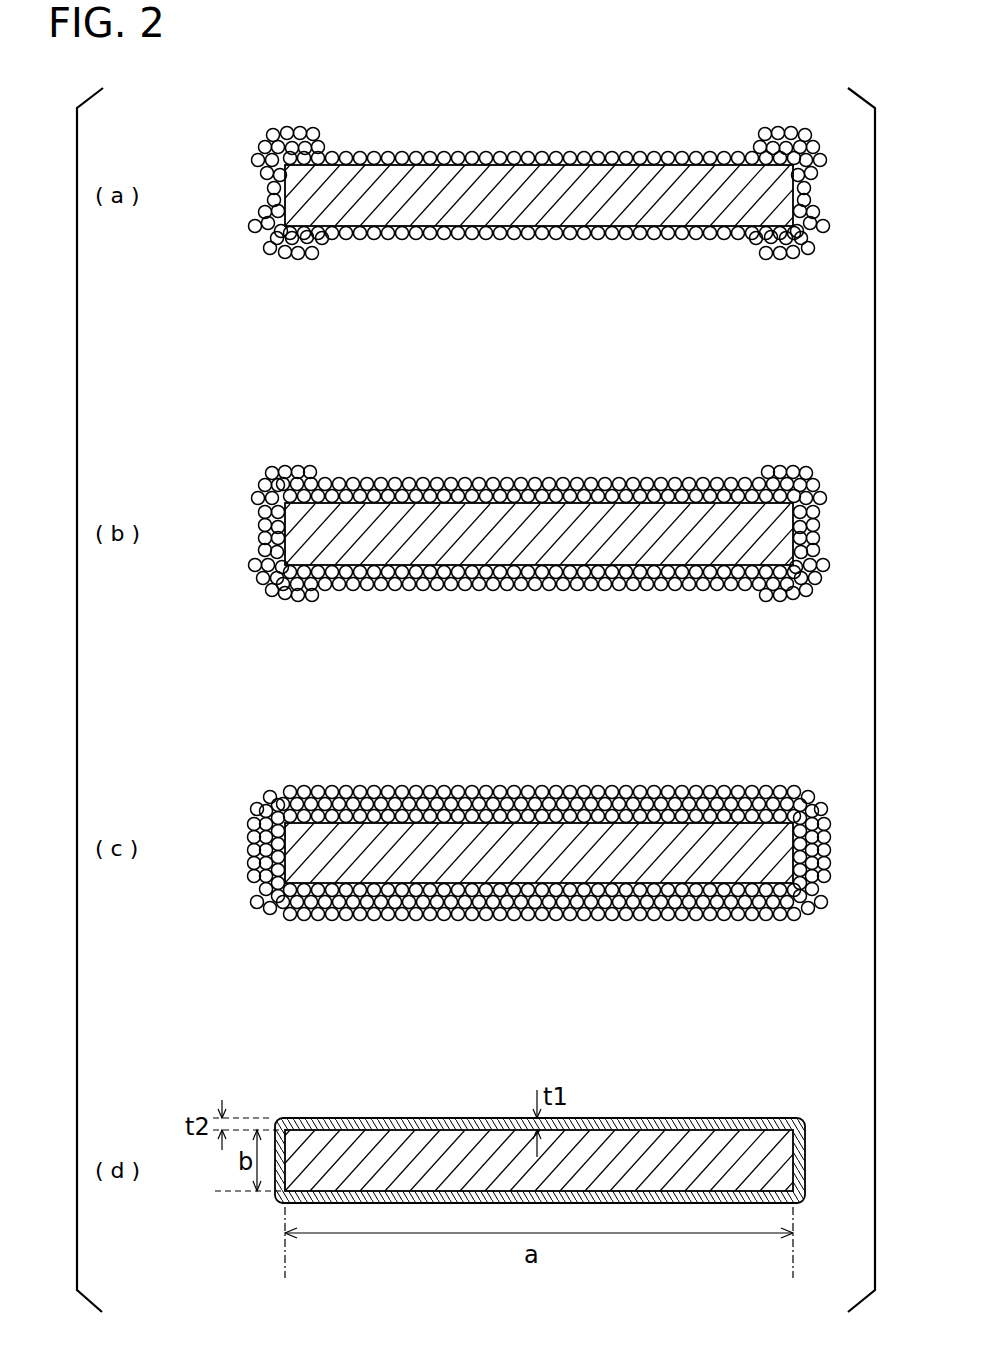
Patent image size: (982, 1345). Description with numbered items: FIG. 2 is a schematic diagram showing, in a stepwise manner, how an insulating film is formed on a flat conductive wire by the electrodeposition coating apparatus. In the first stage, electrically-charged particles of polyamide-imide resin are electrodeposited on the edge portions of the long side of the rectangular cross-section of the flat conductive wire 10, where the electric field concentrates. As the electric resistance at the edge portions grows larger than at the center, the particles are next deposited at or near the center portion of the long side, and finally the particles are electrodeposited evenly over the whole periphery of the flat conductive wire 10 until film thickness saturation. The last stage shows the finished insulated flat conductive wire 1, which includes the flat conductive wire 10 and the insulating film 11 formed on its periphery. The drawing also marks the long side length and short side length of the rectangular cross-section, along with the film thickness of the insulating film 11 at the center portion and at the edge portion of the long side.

The insulated flat conductive wire 1 is at (504, 1121).
The flat conductive wire 10 is at (465, 178).
The insulating film 11 is at (605, 1120).